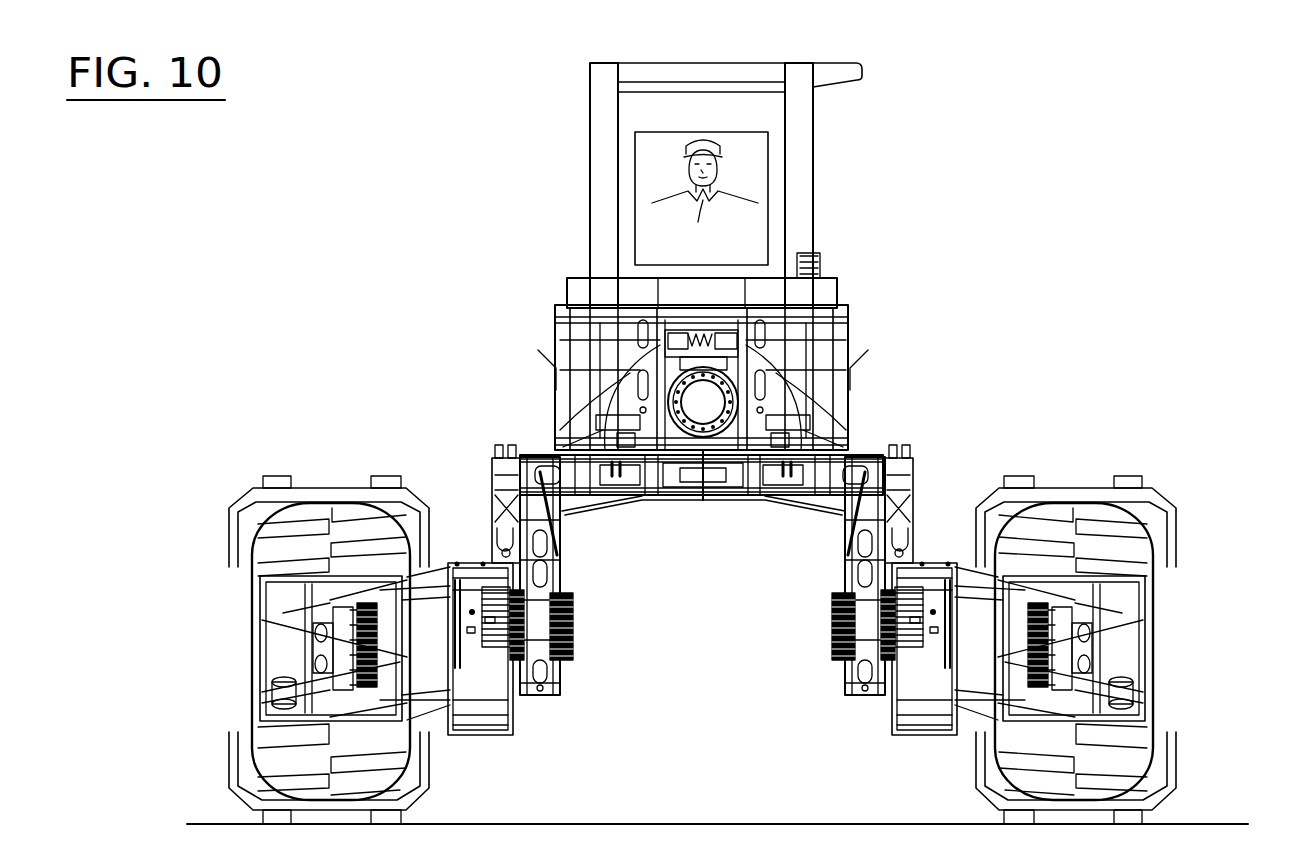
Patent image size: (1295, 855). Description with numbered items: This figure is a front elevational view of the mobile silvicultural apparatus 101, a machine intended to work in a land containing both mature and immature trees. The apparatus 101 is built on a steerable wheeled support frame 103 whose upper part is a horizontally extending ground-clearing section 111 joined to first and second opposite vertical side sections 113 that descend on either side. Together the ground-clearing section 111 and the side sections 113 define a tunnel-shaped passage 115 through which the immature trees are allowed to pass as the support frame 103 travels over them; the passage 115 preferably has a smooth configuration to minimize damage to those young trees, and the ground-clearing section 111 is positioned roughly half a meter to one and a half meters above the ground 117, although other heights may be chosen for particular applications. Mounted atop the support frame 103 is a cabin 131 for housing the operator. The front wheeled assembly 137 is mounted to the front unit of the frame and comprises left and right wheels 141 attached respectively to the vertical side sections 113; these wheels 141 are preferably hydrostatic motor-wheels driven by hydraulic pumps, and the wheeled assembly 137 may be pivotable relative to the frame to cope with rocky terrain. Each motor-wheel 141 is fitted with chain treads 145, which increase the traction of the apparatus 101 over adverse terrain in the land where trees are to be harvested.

The mobile silvicultural apparatus 101 is at (1002, 110).
The steerable wheeled support frame 103 is at (873, 453).
The ground-clearing section 111 is at (703, 497).
The vertical side sections 113 is at (560, 570).
The tunnel-shaped passage 115 is at (720, 655).
The ground 117 is at (592, 822).
The cabin 131 is at (805, 187).
The front wheeled assembly 137 is at (330, 475).
The hydrostatic motor-wheels 141 is at (280, 655).
The chain treads 145 is at (243, 505).